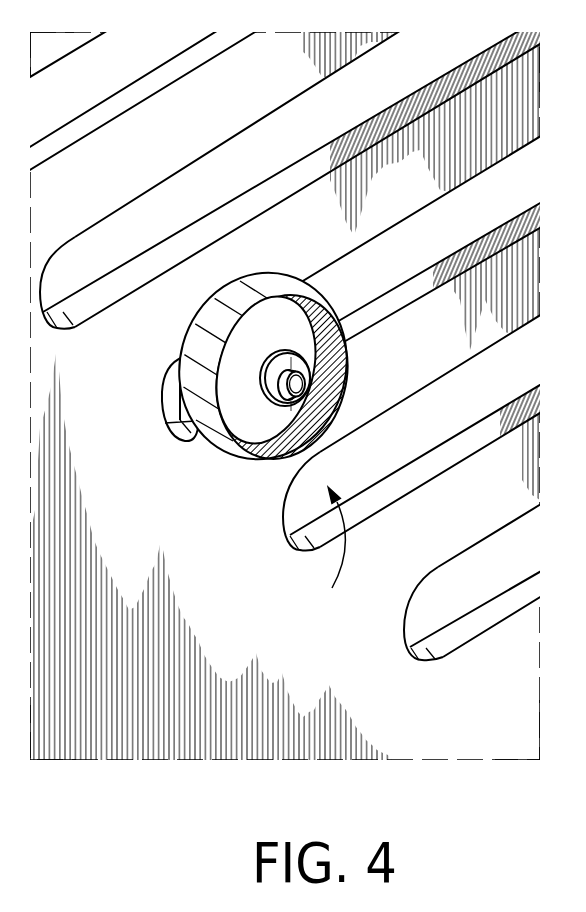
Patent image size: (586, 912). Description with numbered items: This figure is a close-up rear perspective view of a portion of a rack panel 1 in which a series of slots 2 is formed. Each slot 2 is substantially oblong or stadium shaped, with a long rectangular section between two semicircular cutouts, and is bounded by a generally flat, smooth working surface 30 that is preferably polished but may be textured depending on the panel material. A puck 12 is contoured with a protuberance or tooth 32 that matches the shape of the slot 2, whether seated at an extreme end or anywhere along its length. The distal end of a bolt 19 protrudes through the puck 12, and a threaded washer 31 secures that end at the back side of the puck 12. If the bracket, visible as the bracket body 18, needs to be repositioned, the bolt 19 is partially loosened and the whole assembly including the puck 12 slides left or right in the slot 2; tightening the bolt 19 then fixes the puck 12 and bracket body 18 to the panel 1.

The panel 1 is at (235, 533).
The slot 2 is at (330, 550).
The puck 12 is at (280, 322).
The bracket body 18 is at (168, 405).
The bolt 19 is at (302, 385).
The working surface 30 is at (410, 478).
The threaded washer 31 is at (265, 368).
The tooth 32 is at (182, 365).